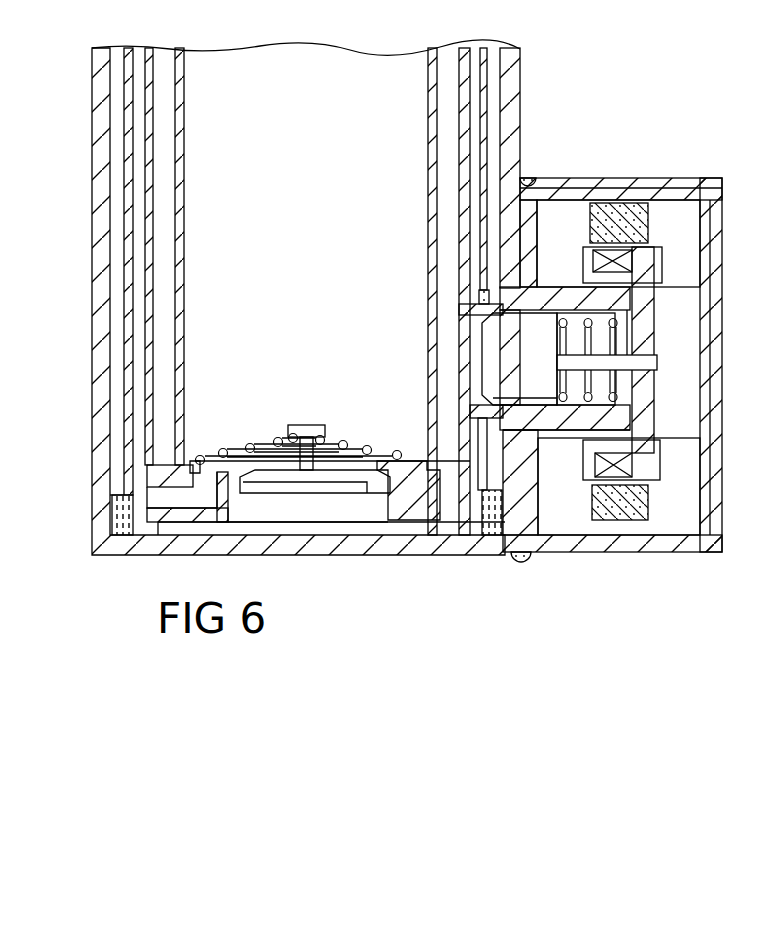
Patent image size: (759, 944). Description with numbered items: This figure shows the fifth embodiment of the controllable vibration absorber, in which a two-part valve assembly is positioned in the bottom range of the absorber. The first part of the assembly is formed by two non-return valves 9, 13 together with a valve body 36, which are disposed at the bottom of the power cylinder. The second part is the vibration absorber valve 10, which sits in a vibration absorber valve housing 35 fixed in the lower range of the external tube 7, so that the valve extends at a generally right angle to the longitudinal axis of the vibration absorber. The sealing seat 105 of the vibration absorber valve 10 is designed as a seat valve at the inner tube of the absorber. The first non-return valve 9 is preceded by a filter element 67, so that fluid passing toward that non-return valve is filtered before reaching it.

The external tube 7 is at (512, 77).
The filter element 67 is at (484, 128).
The vibration absorber valve housing 35 is at (632, 183).
The sealing seat 105 is at (487, 315).
The first non-return valve 9 is at (212, 440).
The second non-return valve 13 is at (352, 452).
The valve body 36 is at (417, 497).
The vibration absorber valve 10 is at (562, 440).